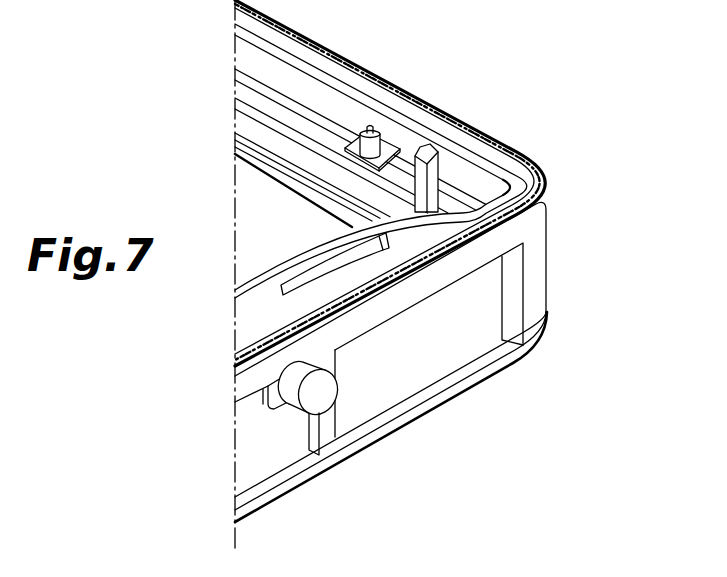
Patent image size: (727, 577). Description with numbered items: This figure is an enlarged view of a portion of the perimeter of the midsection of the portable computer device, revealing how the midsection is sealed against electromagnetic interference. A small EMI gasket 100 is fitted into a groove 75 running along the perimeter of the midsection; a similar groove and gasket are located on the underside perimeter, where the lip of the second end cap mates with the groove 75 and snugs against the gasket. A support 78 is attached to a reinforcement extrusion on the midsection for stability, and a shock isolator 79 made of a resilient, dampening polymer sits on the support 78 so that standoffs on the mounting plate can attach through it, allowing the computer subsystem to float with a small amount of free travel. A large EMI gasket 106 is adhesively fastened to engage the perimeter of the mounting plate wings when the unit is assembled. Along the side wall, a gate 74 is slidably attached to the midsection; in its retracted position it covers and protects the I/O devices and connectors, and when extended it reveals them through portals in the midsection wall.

The gate 74 is at (293, 311).
The groove 75 is at (524, 158).
The support 78 is at (386, 146).
The shock isolator 79 is at (370, 141).
The small EMI gasket 100 is at (547, 184).
The large EMI gasket 106 is at (435, 148).